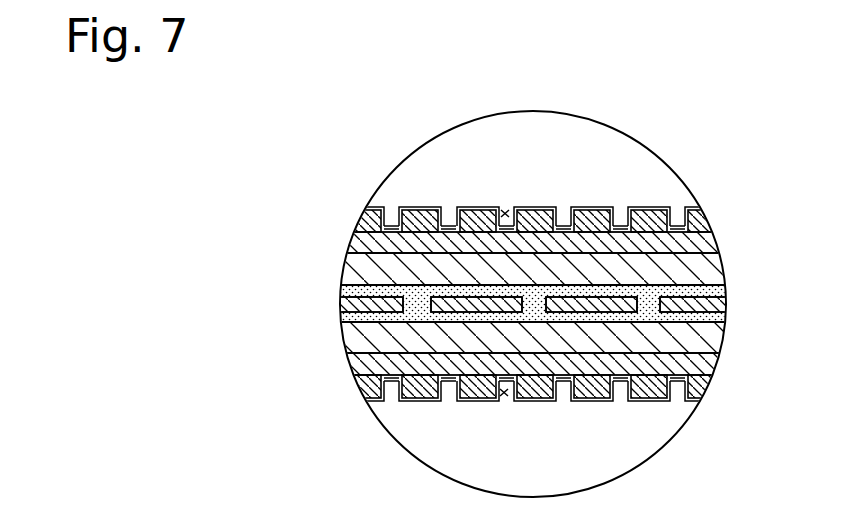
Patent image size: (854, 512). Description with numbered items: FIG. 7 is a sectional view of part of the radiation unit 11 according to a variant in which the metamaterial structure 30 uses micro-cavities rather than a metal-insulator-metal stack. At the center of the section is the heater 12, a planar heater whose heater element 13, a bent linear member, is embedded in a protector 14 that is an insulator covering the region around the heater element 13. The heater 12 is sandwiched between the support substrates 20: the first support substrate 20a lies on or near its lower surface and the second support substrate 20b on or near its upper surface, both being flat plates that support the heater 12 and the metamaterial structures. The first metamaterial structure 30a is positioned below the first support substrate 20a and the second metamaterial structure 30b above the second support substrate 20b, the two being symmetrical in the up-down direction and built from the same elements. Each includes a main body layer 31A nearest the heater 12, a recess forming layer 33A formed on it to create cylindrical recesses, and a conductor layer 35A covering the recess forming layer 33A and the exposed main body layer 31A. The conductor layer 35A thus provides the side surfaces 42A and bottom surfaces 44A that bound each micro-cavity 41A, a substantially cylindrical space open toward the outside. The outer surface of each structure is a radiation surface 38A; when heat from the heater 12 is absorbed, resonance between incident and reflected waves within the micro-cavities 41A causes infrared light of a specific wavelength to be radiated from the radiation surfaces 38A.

The radiation unit 11 is at (431, 304).
The metamaterial structure 30 is at (427, 305).
The second metamaterial structure 30b is at (228, 185).
The first metamaterial structure 30a is at (228, 357).
The conductor layer 35A is at (405, 206).
The recess forming layer 33A is at (372, 221).
The main body layer 31A is at (357, 243).
The support substrates 20 is at (431, 292).
The second support substrate 20b is at (357, 262).
The first support substrate 20a is at (353, 339).
The heater 12 is at (464, 304).
The heater element 13 is at (340, 295).
The protector 14 is at (348, 316).
The bottom surface 44A is at (447, 226).
The side surface 42A is at (450, 223).
The micro-cavity 41A is at (505, 209).
The radiation surface 38A is at (623, 182).